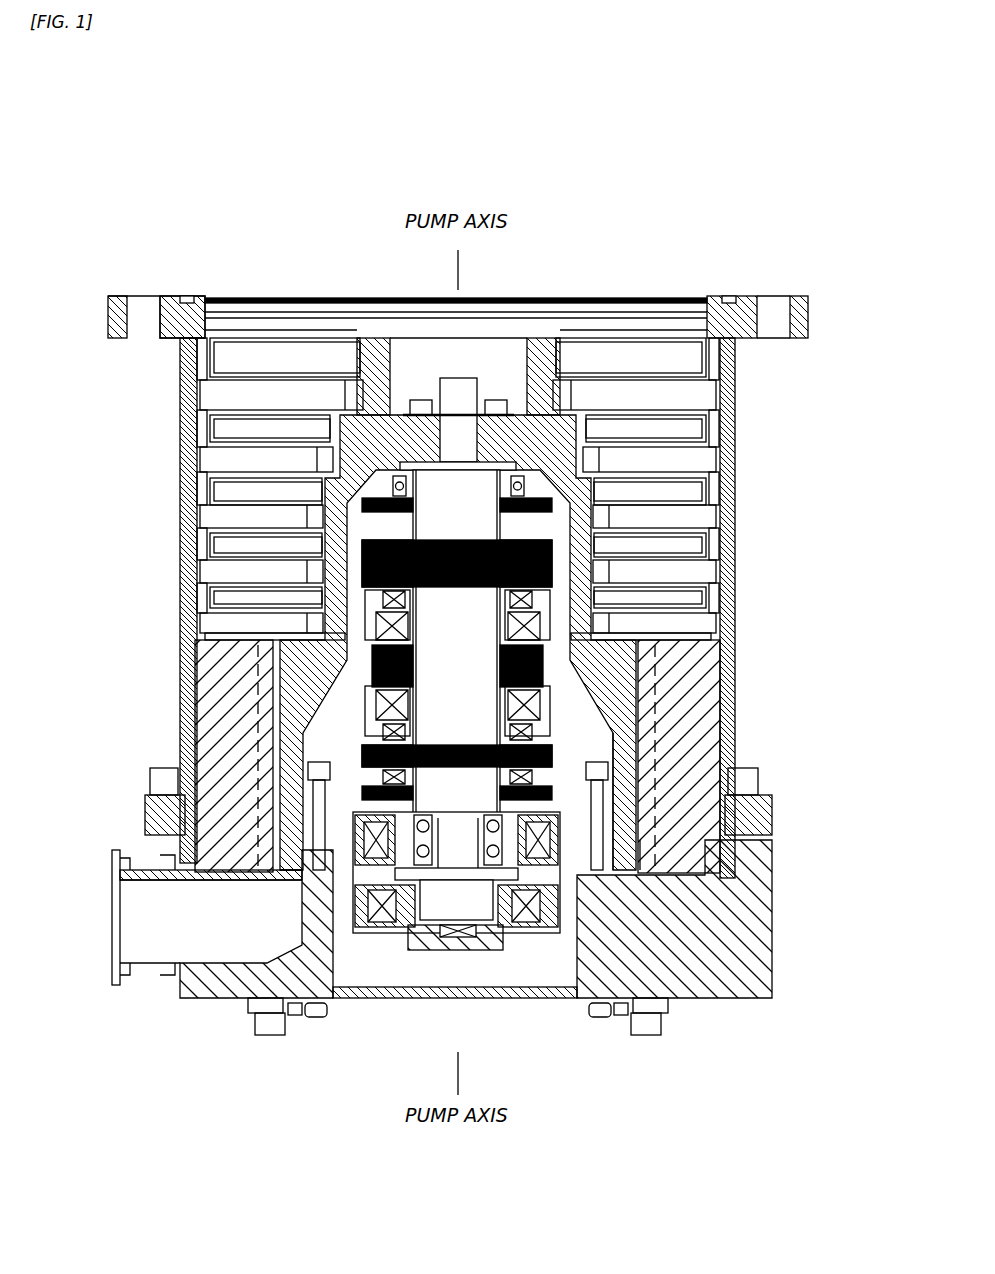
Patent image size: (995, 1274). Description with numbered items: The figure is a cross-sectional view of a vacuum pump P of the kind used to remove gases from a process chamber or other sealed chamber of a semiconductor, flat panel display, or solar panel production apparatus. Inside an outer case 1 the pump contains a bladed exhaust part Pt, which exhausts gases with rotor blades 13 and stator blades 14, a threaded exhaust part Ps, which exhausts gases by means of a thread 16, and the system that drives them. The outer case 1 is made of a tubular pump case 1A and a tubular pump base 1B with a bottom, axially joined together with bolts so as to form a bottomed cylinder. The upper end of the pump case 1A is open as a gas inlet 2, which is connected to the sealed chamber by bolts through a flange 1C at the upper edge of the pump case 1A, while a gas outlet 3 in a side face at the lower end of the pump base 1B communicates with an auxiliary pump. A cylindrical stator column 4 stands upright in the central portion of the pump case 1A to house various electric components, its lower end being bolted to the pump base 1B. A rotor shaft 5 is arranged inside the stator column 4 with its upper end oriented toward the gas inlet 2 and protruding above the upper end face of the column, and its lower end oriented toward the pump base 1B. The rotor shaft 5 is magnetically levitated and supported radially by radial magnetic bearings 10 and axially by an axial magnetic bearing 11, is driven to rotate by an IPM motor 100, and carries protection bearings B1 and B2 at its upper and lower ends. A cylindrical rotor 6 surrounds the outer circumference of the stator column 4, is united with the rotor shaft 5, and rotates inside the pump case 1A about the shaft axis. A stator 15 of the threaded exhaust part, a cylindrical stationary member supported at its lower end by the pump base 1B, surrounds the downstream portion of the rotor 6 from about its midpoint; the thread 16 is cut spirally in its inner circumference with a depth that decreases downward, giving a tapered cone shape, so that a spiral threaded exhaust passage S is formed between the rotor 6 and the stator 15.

The outer case 1 is at (826, 770).
The pump case 1A is at (735, 730).
The pump base 1B is at (758, 895).
The flange 1C is at (114, 296).
The gas inlet 2 is at (264, 298).
The gas outlet 3 is at (113, 920).
The stator column 4 is at (572, 740).
The rotor shaft 5 is at (464, 382).
The rotor 6 is at (372, 330).
The radial magnetic bearings 10 is at (358, 545).
The axial magnetic bearing 11 is at (524, 945).
The rotor blades 13 is at (692, 353).
The stator blades 14 is at (706, 400).
The stator of the threaded exhaust part 15 is at (710, 675).
The thread 16 is at (660, 698).
The IPM motor 100 is at (360, 640).
The protection bearing B1 is at (398, 474).
The protection bearing B2 is at (482, 826).
The threaded exhaust passage S is at (638, 845).
The vacuum pump P is at (822, 246).
The bladed exhaust part Pt is at (126, 620).
The threaded exhaust part Ps is at (126, 840).